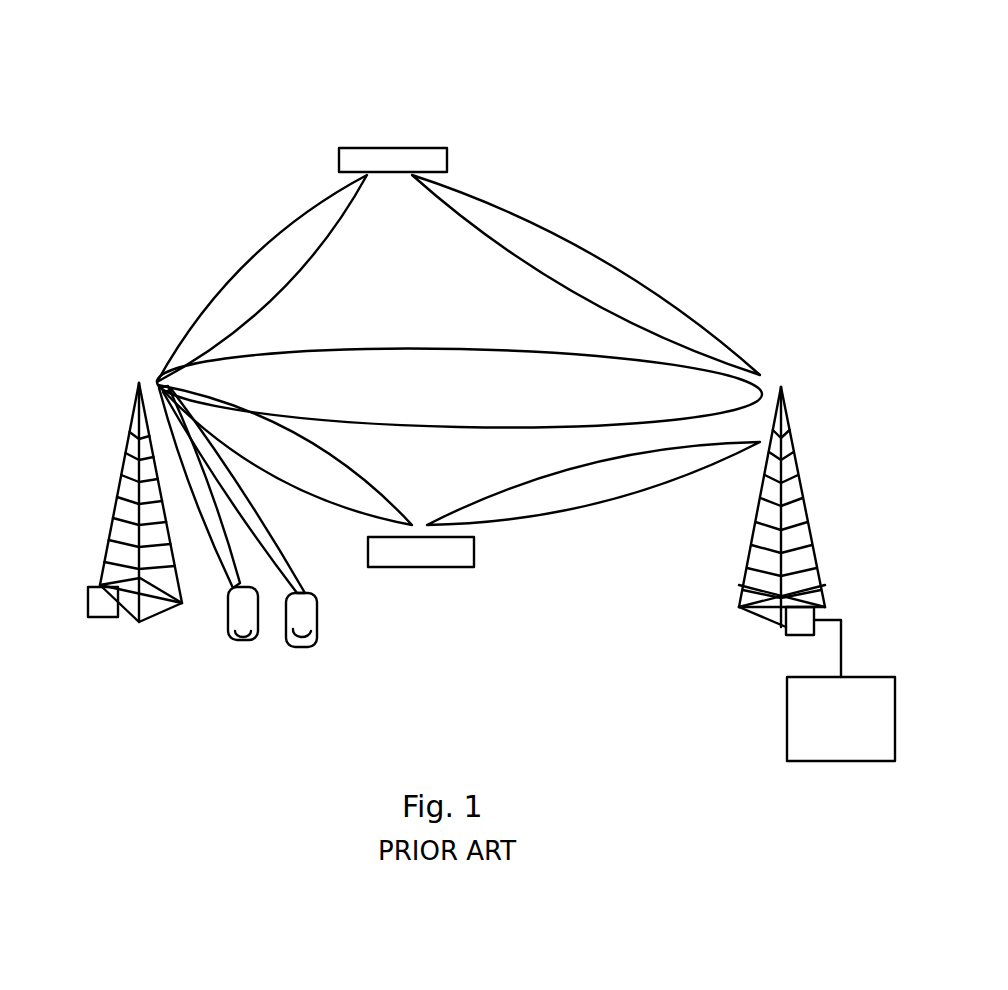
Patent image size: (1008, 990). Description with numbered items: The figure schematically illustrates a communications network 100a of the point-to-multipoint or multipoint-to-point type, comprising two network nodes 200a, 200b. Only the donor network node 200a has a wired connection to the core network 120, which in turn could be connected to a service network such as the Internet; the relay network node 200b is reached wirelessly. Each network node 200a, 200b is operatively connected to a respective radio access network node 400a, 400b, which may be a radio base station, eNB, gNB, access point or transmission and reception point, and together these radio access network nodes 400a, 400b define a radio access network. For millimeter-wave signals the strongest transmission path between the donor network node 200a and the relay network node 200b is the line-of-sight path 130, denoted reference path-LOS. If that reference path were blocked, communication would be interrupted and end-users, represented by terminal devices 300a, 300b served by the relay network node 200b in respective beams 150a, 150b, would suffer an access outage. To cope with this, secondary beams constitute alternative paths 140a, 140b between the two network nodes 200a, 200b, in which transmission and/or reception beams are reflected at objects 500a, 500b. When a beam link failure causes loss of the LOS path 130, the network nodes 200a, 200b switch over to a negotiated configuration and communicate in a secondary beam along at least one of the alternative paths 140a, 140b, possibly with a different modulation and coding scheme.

The communications network 100a is at (152, 99).
The core network 120 is at (797, 710).
The line-of-sight (LOS) path 130 is at (440, 352).
The alternative path 140a is at (232, 278).
The alternative path 140b is at (372, 485).
The beam 150a is at (213, 553).
The beam 150b is at (273, 575).
The donor network node 200a is at (780, 622).
The relay network node 200b is at (89, 605).
The terminal device 300a is at (240, 640).
The terminal device 300b is at (310, 634).
The radio access network node 400a is at (787, 402).
The radio access network node 400b is at (137, 396).
The object 500a is at (397, 156).
The object 500b is at (415, 557).